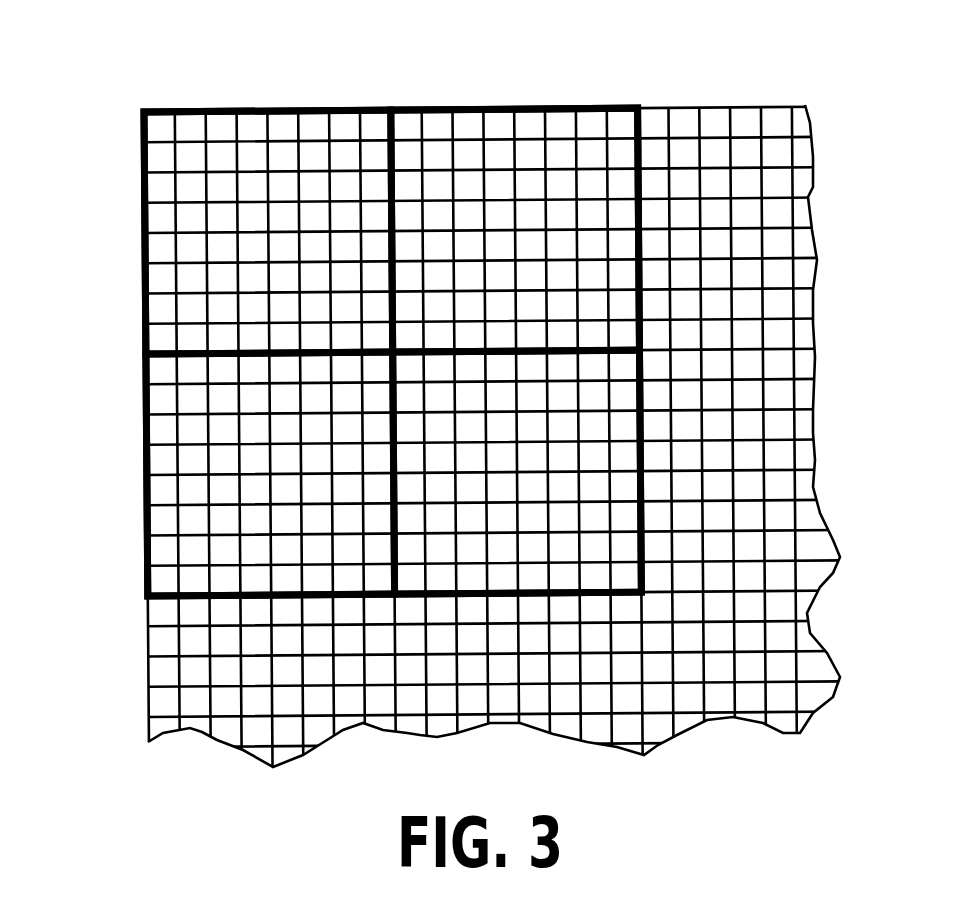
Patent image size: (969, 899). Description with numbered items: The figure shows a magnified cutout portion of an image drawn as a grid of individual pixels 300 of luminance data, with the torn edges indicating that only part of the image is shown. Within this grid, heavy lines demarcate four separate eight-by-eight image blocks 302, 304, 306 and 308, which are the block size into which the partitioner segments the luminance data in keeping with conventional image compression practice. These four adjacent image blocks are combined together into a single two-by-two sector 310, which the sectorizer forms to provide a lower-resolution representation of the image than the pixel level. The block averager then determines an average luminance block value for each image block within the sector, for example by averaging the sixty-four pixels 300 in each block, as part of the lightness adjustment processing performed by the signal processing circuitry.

The pixels 300 is at (157, 132).
The 8×8 image block 302 is at (146, 218).
The 8×8 image block 304 is at (147, 462).
The 8×8 image block 306 is at (498, 110).
The 8×8 image block 308 is at (643, 453).
The sector 310 is at (290, 48).